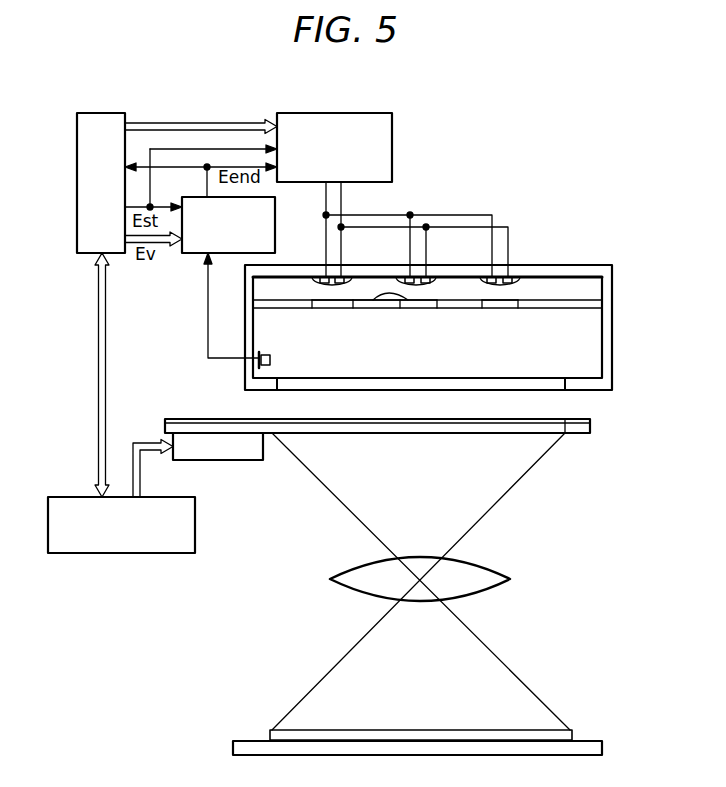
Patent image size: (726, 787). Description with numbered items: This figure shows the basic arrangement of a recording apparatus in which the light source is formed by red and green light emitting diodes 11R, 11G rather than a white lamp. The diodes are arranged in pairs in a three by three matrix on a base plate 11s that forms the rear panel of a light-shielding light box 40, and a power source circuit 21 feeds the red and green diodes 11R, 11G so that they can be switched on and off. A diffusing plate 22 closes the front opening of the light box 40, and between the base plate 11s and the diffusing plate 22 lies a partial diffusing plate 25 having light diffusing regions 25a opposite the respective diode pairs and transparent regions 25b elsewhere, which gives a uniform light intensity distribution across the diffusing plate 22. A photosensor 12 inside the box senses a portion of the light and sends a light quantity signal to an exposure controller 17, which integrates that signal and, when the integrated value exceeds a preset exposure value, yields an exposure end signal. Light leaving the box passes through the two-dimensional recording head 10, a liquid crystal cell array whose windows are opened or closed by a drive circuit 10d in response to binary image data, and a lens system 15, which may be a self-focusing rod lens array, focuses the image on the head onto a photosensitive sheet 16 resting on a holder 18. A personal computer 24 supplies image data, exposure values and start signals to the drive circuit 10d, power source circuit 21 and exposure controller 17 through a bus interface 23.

The two-dimensional recording head 10 is at (590, 428).
The drive circuit 10d is at (248, 460).
The red light emitting diode 11R is at (317, 276).
The green light emitting diode 11G is at (347, 277).
The base plate 11s is at (568, 268).
The photosensor 12 is at (270, 353).
The lens system 15 is at (508, 577).
The photosensitive sheet 16 is at (423, 729).
The exposure controller 17 is at (275, 202).
The holder 18 is at (602, 748).
The power source circuit 21 is at (383, 113).
The diffusing plate 22 is at (553, 390).
The bus interface 23 is at (120, 113).
The personal computer 24 is at (180, 553).
The partial diffusing plate 25 is at (588, 308).
The light diffusing region 25a is at (340, 308).
The transparent region 25b is at (390, 308).
The light box 40 is at (612, 338).